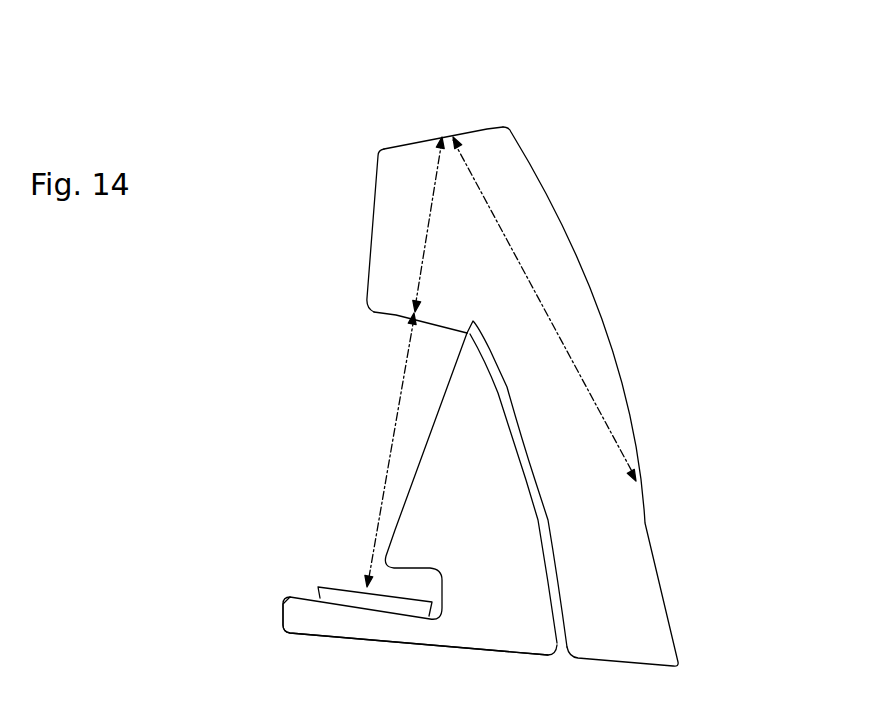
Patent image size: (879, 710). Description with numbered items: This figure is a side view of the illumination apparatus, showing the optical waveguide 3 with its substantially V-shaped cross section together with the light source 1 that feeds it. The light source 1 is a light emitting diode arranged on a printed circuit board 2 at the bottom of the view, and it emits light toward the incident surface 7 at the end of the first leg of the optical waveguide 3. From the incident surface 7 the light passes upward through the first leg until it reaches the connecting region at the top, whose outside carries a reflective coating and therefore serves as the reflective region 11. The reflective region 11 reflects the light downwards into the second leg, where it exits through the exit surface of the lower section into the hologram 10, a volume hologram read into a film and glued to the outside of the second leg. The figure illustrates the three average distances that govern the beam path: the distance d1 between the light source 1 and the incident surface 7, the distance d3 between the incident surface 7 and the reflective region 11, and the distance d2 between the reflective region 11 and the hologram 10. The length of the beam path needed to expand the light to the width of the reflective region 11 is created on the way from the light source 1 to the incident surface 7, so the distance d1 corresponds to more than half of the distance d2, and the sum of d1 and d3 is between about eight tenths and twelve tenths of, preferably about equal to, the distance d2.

The light source 1 is at (353, 583).
The printed circuit board 2 is at (330, 588).
The optical waveguide 3 is at (640, 339).
The incident surface 7 is at (396, 315).
The hologram 10 is at (645, 523).
The reflective region 11 is at (487, 129).
The average distance between the light source and the incident surface d1 is at (388, 454).
The average distance between the reflective region and the hologram d2 is at (537, 300).
The average distance between the incident surface and the reflective region d3 is at (429, 233).